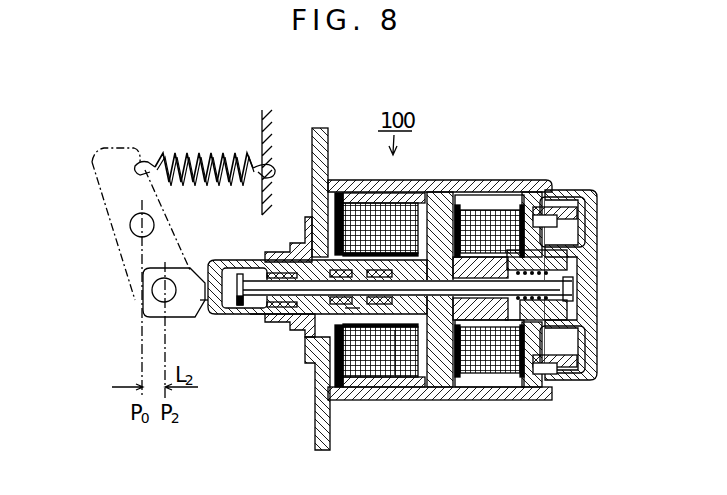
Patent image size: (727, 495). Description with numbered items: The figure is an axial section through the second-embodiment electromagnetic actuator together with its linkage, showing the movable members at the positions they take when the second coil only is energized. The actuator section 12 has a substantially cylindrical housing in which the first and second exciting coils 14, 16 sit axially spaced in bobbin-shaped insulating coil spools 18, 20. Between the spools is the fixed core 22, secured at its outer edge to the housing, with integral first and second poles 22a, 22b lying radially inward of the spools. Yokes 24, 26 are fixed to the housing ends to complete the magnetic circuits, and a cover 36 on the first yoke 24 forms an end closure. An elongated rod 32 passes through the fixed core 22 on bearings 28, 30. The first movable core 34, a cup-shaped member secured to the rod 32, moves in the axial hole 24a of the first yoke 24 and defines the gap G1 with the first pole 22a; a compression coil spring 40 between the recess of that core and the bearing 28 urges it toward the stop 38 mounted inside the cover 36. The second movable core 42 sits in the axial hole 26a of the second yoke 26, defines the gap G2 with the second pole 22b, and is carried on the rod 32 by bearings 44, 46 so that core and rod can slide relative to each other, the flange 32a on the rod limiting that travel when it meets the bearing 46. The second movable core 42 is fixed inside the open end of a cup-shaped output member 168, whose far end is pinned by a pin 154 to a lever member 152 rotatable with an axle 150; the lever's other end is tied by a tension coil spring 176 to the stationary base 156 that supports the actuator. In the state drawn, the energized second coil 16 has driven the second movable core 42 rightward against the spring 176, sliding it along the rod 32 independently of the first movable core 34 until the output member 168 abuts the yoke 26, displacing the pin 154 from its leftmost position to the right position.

The actuator section 12 is at (378, 190).
The first exciting coil 14 is at (531, 195).
The second exciting coil 16 is at (400, 205).
The first coil spool 18 is at (462, 210).
The second coil spool 20 is at (350, 188).
The fixed core 22 is at (445, 388).
The first pole 22a is at (492, 335).
The second pole 22b is at (410, 345).
The first yoke 24 is at (548, 388).
The axial hole 24a is at (577, 235).
The second yoke 26 is at (322, 385).
The axial hole 26a is at (312, 335).
The bearing 28 is at (498, 215).
The bearing 30 is at (437, 190).
The rod 32 is at (255, 285).
The flange 32a is at (240, 308).
The first movable core 34 is at (565, 312).
The cover 36 is at (595, 375).
The stop 38 is at (575, 288).
The compression coil spring 40 is at (585, 262).
The second movable core 42 is at (297, 252).
The bearing 44 is at (320, 200).
The bearing 46 is at (292, 310).
The axle 150 is at (130, 224).
The lever member 152 is at (120, 252).
The pin 154 is at (152, 290).
The stationary base 156 is at (258, 132).
The output member 168 is at (180, 305).
The tension coil spring 176 is at (203, 165).
The gap G1 is at (512, 322).
The gap G2 is at (353, 310).